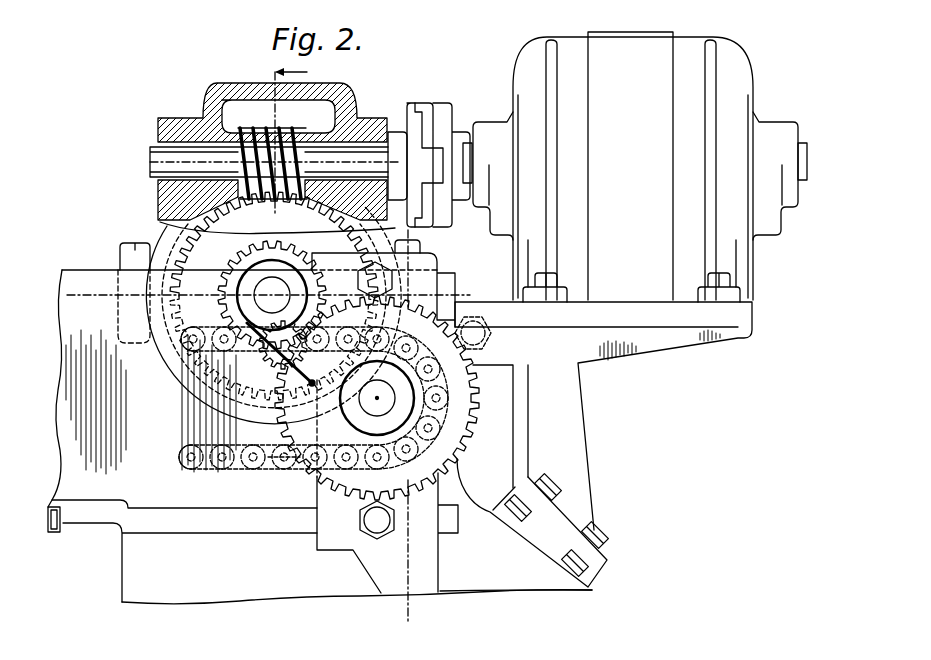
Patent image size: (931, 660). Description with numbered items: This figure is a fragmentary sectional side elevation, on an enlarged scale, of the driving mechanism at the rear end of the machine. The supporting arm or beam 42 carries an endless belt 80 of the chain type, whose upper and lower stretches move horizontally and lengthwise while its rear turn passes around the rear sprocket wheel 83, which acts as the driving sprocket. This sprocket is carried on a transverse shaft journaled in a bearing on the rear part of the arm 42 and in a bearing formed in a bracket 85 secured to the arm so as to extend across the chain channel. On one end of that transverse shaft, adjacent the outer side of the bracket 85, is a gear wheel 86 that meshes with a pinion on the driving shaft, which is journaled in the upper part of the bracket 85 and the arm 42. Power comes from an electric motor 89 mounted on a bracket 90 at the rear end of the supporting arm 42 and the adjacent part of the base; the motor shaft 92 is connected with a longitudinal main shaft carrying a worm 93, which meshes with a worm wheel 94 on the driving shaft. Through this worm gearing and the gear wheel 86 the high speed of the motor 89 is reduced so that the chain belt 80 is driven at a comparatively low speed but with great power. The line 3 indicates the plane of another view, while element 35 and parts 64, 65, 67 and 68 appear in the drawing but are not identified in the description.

The section line 3- 3 is at (343, 347).
The base 35 is at (531, 582).
The supporting arm 42 is at (83, 270).
The gear 64 is at (377, 398).
The sprocket 65 is at (278, 357).
The pinion 67 is at (241, 256).
The pinion shaft 68 is at (256, 297).
The endless belt 80 is at (200, 454).
The rear sprocket wheel 83 is at (287, 468).
The bracket 85 is at (331, 542).
The gear wheel 86 is at (459, 460).
The electric motor 89 is at (743, 84).
The bracket 90 is at (722, 334).
The motor shaft 92 is at (358, 163).
The worm 93 is at (290, 133).
The worm wheel 94 is at (298, 209).